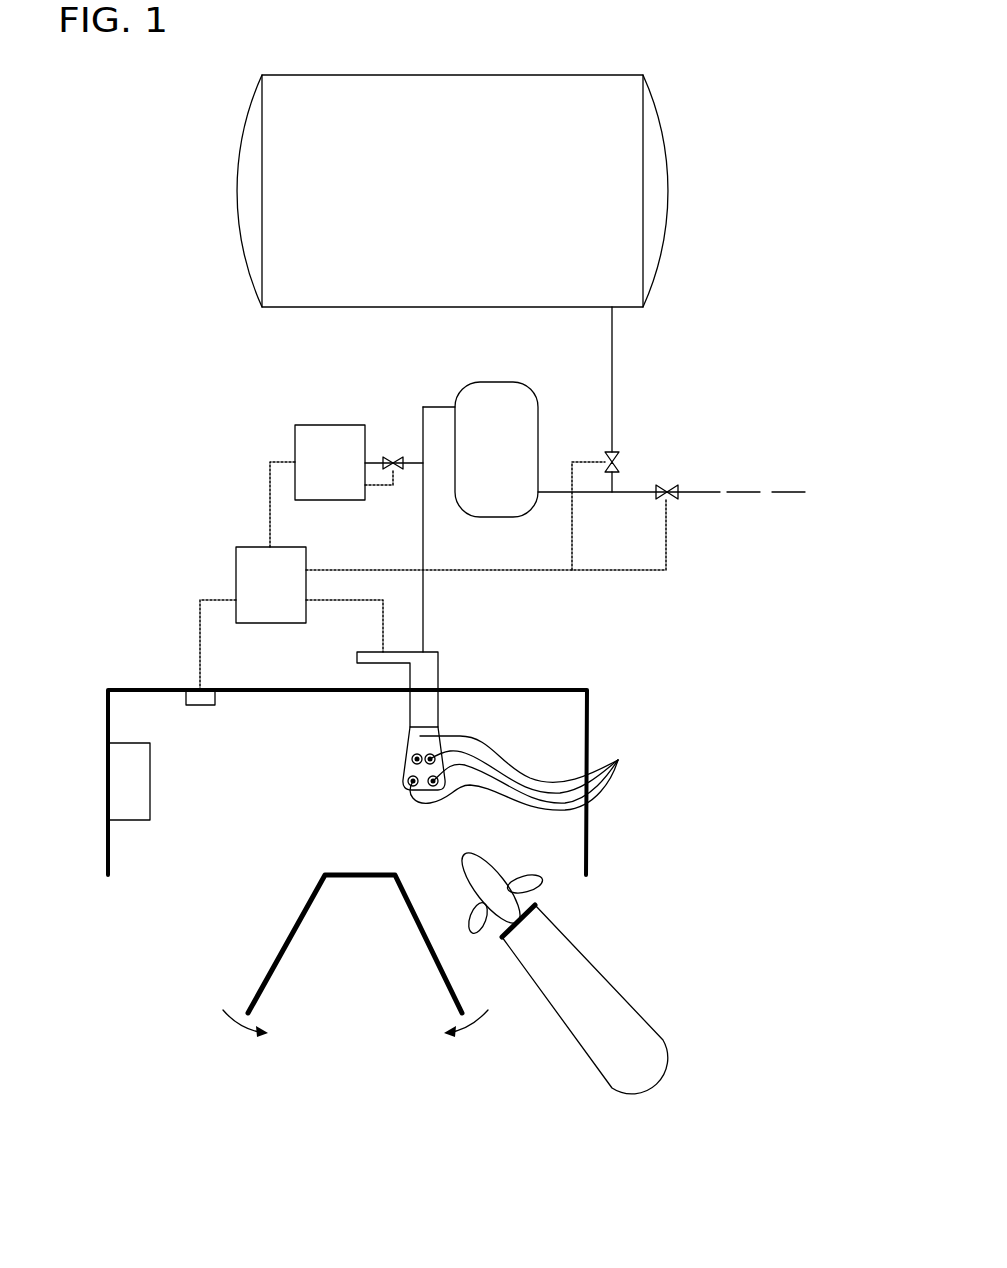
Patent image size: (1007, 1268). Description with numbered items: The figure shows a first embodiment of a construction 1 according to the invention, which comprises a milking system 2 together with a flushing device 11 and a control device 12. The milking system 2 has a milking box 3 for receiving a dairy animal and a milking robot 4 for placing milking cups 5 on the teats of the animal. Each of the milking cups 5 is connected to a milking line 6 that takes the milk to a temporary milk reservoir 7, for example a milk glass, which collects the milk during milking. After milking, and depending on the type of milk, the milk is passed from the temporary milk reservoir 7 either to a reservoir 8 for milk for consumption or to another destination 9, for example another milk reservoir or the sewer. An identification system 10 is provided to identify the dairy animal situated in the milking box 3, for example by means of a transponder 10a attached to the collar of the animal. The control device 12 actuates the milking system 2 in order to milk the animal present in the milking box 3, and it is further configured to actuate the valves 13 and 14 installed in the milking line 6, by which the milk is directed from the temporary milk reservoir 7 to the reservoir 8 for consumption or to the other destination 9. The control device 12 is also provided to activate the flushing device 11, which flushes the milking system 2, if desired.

The construction 1 is at (707, 218).
The milking system 2 is at (153, 600).
The milking box 3 is at (588, 707).
The milking robot 4 is at (428, 663).
The milking cups 5 is at (523, 768).
The milking line 6 is at (423, 590).
The temporary milk reservoir 7 is at (482, 402).
The reservoir for milk for consumption 8 is at (510, 77).
The other destination 9 is at (783, 492).
The identification system 10 is at (193, 695).
The transponder 10a is at (533, 907).
The flushing device 11 is at (305, 445).
The control device 12 is at (245, 562).
The valve 13 is at (616, 457).
The valve 14 is at (672, 490).